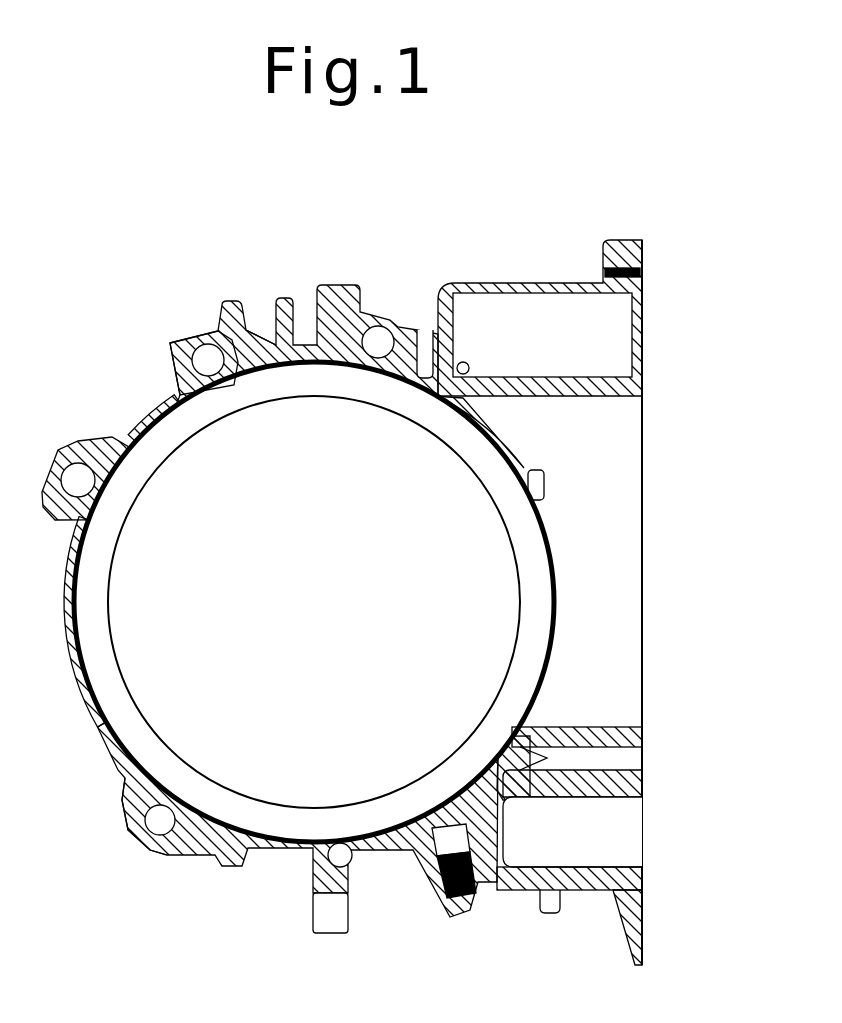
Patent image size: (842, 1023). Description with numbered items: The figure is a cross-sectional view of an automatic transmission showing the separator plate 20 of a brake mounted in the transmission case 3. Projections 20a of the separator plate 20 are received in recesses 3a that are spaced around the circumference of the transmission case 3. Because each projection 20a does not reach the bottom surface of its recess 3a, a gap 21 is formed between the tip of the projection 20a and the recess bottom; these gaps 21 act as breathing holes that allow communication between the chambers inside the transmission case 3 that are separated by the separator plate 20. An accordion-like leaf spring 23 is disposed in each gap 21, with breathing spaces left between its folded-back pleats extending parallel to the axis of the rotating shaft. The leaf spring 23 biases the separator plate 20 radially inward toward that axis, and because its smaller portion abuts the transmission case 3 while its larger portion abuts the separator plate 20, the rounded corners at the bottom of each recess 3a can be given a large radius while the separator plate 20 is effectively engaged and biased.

The transmission case 3 is at (228, 303).
The recess 3a is at (248, 328).
The separator plate 20 is at (157, 443).
The projection 20a is at (190, 372).
The gap 21 is at (193, 340).
The accordion-like leaf spring 23 is at (130, 827).